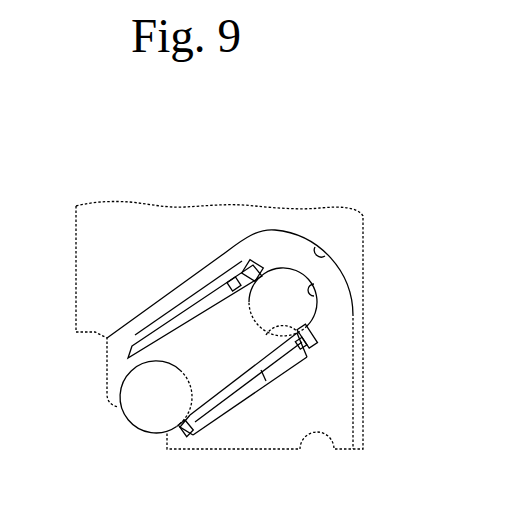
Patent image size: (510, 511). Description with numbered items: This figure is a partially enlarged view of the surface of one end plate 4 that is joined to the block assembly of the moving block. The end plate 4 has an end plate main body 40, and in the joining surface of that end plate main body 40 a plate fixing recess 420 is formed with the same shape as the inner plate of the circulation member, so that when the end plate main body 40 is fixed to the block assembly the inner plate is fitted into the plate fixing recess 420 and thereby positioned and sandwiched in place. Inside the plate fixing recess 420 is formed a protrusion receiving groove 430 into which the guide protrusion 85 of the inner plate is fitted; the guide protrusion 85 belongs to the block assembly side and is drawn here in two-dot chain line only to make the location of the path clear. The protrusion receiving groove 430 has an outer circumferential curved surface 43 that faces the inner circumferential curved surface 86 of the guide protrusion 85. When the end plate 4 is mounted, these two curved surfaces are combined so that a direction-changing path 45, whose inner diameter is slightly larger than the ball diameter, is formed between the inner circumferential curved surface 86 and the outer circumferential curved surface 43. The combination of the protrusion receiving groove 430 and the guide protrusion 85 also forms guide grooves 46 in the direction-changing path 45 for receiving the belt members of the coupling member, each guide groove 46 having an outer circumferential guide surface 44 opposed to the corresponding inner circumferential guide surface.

The end plate 4 is at (236, 299).
The end plate main body 40 is at (222, 299).
The plate fixing recess 420 is at (322, 248).
The protrusion receiving groove 430 is at (219, 262).
The outer circumferential curved surface 43 is at (323, 256).
The outer circumferential guide surface 44 is at (219, 311).
The direction-changing path 45 is at (283, 268).
The guide grooves 46 is at (290, 306).
The guide protrusion 85 is at (197, 339).
The inner circumferential curved surface 86 is at (310, 334).